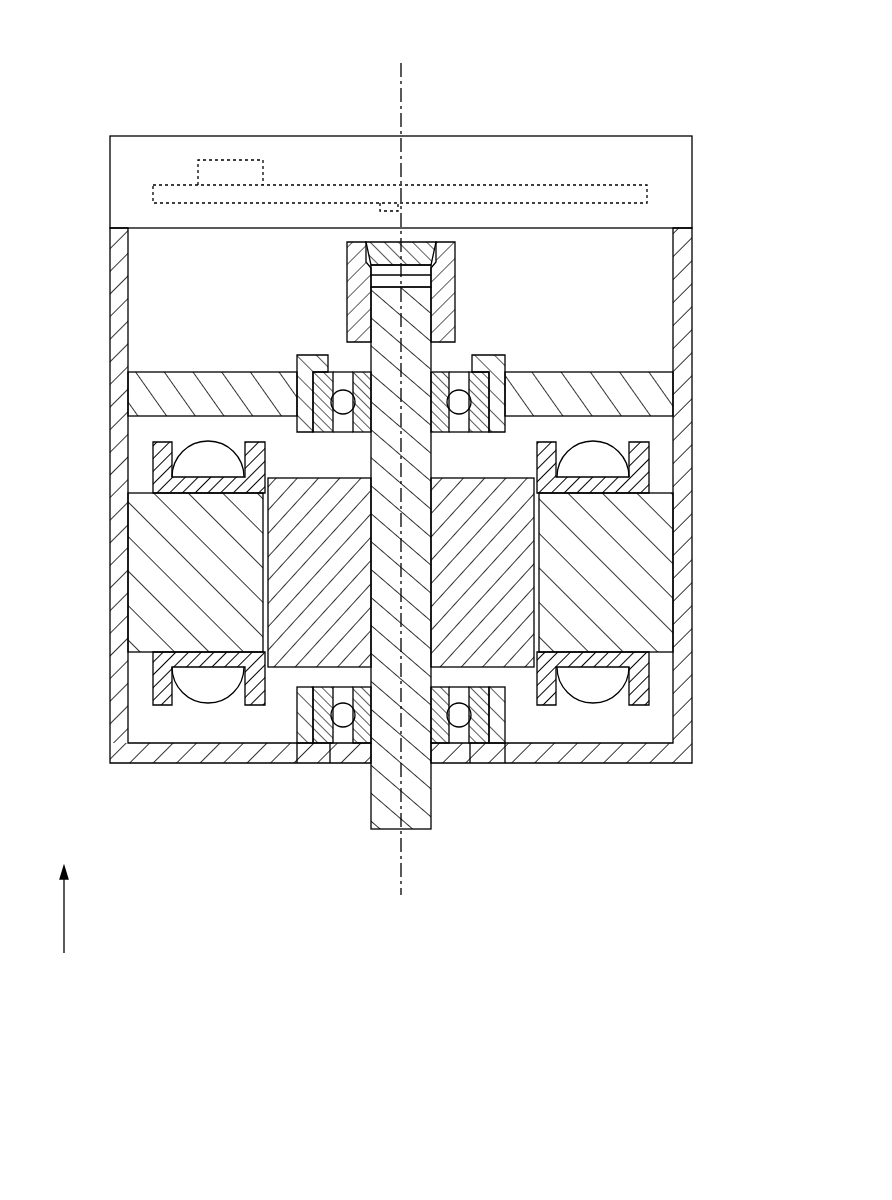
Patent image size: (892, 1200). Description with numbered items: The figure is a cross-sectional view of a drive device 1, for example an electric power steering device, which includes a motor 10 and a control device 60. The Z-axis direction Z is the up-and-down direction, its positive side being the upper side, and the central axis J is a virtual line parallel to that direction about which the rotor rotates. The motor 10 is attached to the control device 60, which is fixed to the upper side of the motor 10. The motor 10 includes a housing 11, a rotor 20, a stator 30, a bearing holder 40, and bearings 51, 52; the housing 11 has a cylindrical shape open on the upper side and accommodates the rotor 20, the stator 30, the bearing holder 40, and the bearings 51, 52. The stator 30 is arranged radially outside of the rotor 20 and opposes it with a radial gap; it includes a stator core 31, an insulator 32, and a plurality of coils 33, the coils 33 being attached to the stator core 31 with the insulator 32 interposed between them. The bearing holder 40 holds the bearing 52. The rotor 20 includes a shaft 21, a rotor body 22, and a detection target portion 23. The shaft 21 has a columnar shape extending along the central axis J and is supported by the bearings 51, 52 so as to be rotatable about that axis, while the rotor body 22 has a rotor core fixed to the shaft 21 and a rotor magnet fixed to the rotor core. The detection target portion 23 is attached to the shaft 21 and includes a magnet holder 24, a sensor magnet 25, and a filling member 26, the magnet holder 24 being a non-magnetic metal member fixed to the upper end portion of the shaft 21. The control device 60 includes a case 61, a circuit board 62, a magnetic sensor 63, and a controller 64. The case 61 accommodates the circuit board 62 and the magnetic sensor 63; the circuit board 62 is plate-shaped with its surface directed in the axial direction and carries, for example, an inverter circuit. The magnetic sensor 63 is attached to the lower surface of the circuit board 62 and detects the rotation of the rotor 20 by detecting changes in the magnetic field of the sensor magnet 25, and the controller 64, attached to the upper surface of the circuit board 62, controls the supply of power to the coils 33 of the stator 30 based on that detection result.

The drive device 1 is at (722, 80).
The motor 10 is at (714, 250).
The housing 11 is at (684, 394).
The rotor 20 is at (340, 258).
The shaft 21 is at (427, 820).
The rotor body 22 is at (290, 630).
The detection target portion 23 is at (753, 264).
The magnet holder 24 is at (455, 330).
The sensor magnet 25 is at (455, 243).
The filling member 26 is at (455, 287).
The stator 30 is at (656, 694).
The stator core 31 is at (650, 552).
The insulator 32 is at (648, 482).
The coils 33 is at (615, 462).
The bearing holder 40 is at (180, 380).
The bearing 51 is at (457, 715).
The bearing 52 is at (345, 372).
The control device 60 is at (696, 177).
The case 61 is at (158, 135).
The circuit board 62 is at (553, 190).
The magnetic sensor 63 is at (390, 205).
The controller 64 is at (232, 160).
The central axis J is at (401, 63).
The Z-axis direction Z is at (62, 896).